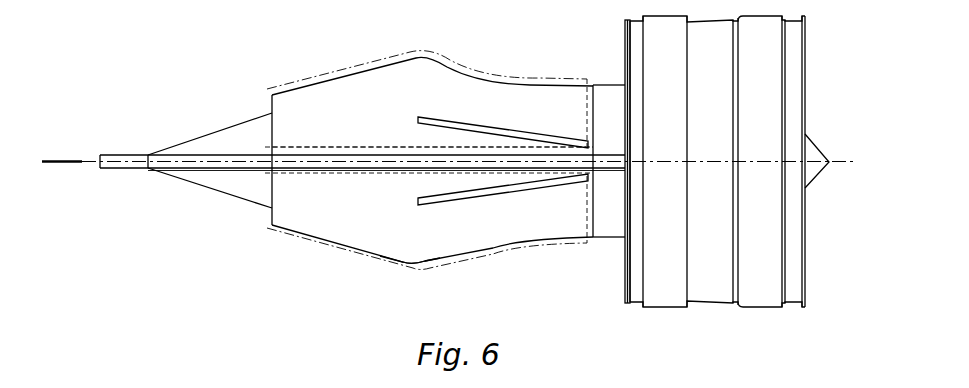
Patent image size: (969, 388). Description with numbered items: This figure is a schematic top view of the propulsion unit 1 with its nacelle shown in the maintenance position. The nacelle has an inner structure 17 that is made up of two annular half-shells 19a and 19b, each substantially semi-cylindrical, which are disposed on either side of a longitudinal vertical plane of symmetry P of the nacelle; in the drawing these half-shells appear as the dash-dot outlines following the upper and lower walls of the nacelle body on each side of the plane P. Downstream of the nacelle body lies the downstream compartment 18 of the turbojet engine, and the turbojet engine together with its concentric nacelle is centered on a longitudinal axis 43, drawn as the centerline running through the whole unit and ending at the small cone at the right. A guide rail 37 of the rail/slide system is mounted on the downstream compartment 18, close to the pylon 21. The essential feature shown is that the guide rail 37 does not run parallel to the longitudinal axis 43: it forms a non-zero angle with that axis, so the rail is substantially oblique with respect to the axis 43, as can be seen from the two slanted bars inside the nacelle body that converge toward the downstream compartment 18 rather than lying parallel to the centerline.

The propulsion unit 1 is at (485, 56).
The inner structure 17 is at (318, 193).
The downstream compartment 18 is at (400, 228).
The annular half-shell 19a is at (455, 262).
The annular half-shell 19b is at (377, 58).
The pylon 21 is at (307, 153).
The guide rail 37 is at (507, 193).
The longitudinal axis 43 is at (840, 157).
The longitudinal vertical plane of symmetry P is at (62, 165).